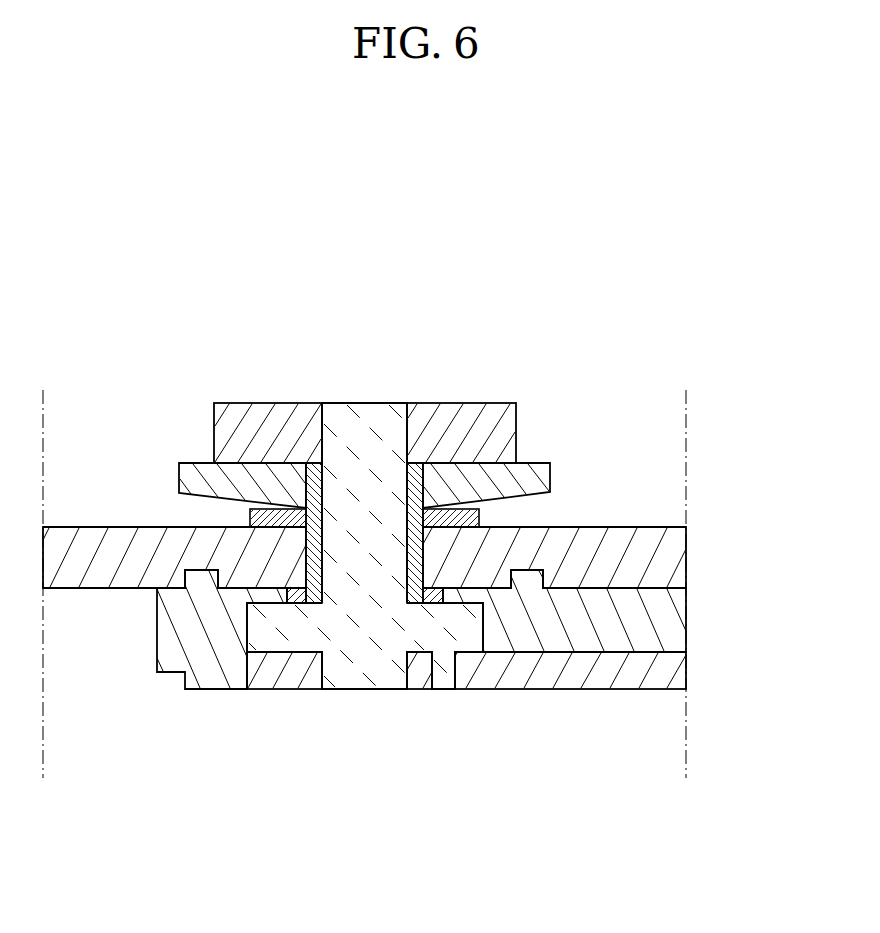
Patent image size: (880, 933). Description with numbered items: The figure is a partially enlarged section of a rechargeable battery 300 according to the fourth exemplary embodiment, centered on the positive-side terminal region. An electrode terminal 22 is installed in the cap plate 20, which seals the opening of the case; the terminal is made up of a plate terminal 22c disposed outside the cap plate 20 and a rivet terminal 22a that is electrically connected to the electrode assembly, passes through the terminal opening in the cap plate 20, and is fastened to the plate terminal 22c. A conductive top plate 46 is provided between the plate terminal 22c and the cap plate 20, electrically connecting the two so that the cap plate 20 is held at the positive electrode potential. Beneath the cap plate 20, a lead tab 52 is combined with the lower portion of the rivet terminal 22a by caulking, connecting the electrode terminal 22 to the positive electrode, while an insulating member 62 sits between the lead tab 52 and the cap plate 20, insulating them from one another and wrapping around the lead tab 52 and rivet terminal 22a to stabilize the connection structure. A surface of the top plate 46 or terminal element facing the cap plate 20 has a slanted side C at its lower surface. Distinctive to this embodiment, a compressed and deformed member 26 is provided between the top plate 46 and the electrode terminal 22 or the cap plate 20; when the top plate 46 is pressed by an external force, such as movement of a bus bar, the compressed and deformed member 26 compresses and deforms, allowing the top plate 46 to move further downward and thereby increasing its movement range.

The rechargeable battery 300 is at (300, 342).
The electrode terminal 22 is at (378, 400).
The plate terminal 22c is at (476, 415).
The rivet terminal 22a is at (365, 663).
The top plate 46 is at (535, 470).
The slanted side C is at (533, 495).
The compressed and deformed member 26 is at (250, 513).
The cap plate 20 is at (653, 556).
The insulating member 62 is at (653, 619).
The lead tab 52 is at (653, 674).